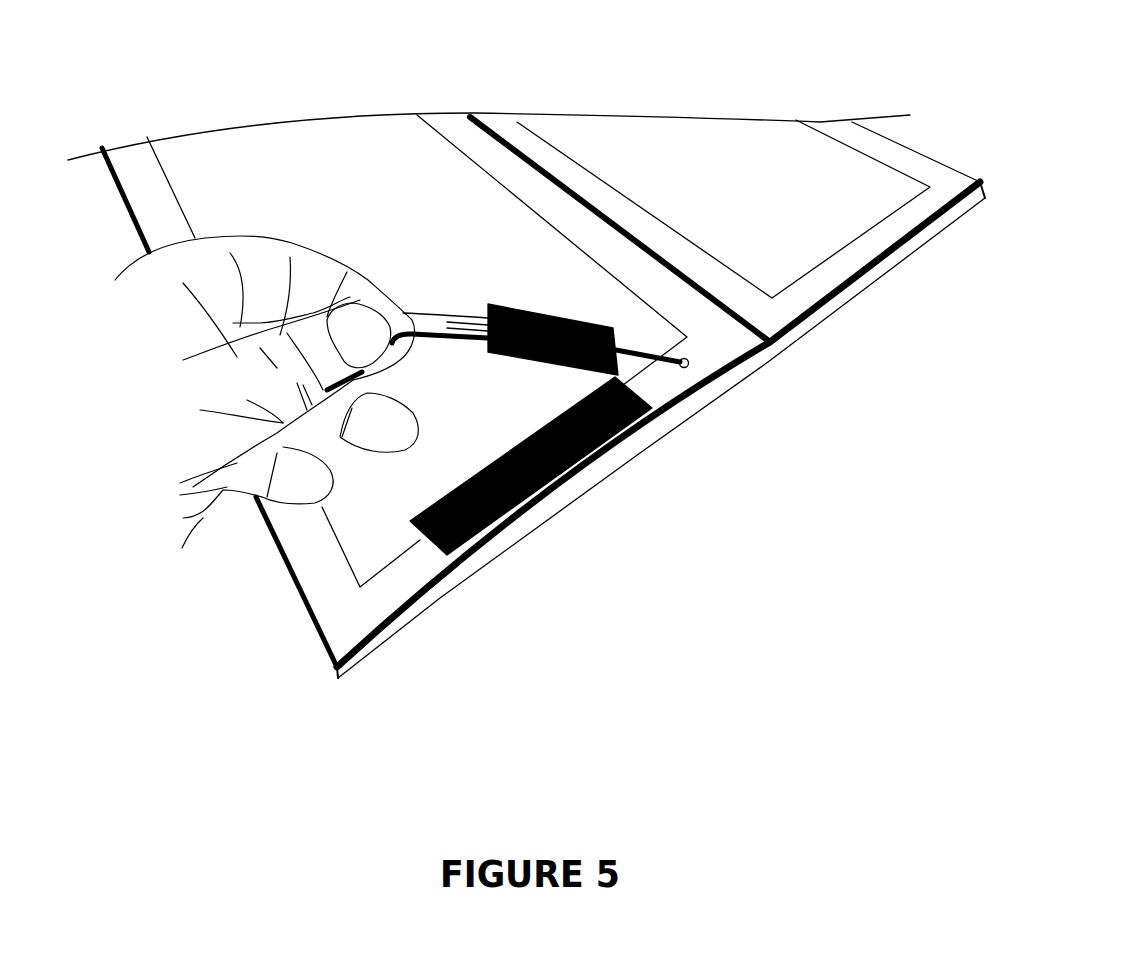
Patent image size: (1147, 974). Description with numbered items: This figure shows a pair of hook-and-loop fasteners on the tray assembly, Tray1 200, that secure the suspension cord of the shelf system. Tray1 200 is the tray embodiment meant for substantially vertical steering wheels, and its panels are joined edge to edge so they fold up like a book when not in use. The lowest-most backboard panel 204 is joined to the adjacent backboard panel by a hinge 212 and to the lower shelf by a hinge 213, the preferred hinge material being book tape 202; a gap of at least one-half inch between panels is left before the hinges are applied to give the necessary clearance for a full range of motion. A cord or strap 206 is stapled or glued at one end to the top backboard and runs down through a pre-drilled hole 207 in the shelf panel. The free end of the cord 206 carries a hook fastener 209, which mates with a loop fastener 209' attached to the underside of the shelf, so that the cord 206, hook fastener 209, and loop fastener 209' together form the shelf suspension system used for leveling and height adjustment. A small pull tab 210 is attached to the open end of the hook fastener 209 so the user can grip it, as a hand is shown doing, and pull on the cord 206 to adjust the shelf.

The Tray1 200 is at (463, 63).
The book tape 202 is at (842, 258).
The backboard panel 204 is at (510, 465).
The cord or strap 206 is at (652, 364).
The pre-drilled hole 207 is at (687, 367).
The hook fastener 209 is at (553, 310).
The loop fastener 209' is at (531, 484).
The pull tab 210 is at (422, 316).
The hinge 212 is at (775, 348).
The hinge 213 is at (338, 673).